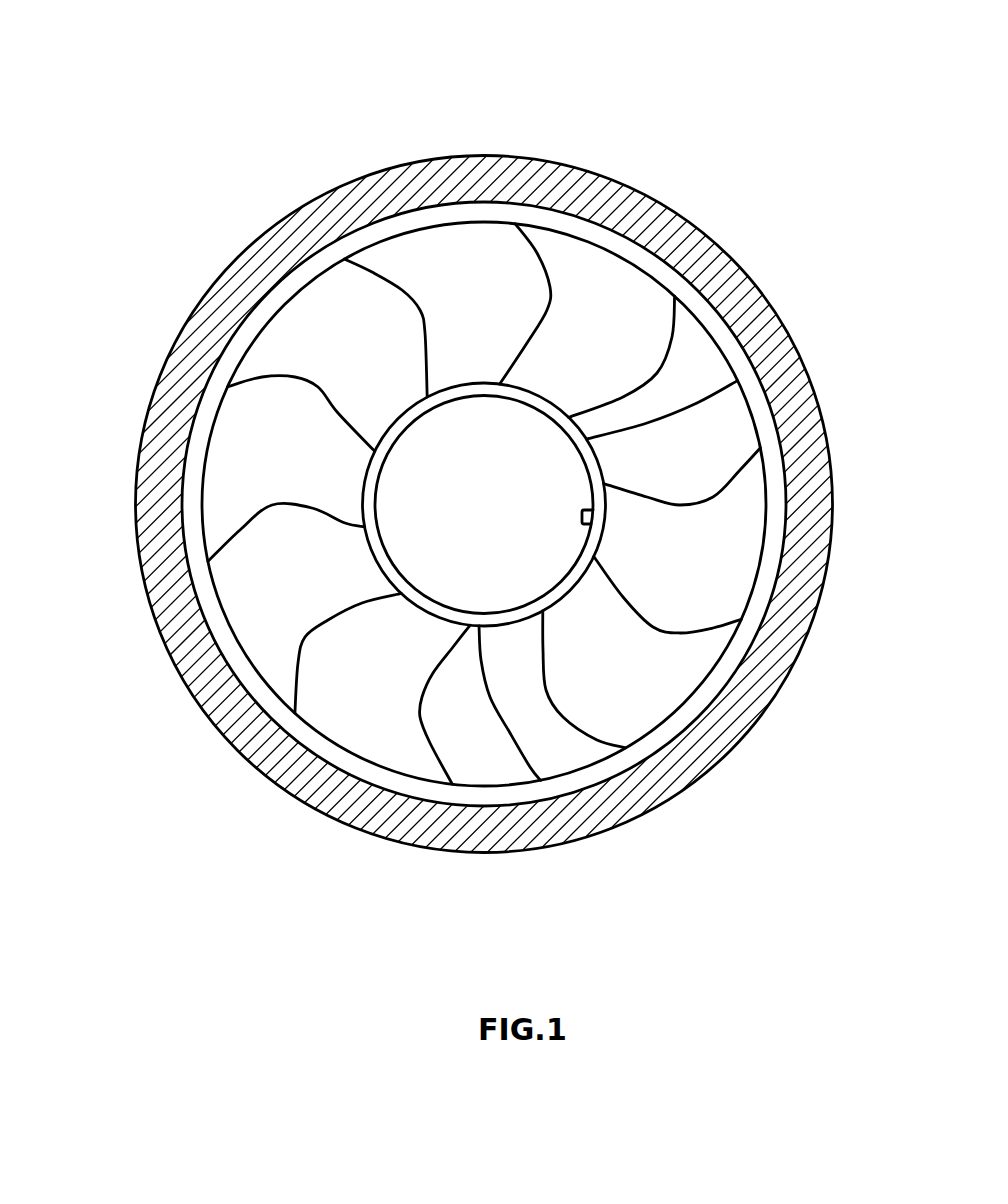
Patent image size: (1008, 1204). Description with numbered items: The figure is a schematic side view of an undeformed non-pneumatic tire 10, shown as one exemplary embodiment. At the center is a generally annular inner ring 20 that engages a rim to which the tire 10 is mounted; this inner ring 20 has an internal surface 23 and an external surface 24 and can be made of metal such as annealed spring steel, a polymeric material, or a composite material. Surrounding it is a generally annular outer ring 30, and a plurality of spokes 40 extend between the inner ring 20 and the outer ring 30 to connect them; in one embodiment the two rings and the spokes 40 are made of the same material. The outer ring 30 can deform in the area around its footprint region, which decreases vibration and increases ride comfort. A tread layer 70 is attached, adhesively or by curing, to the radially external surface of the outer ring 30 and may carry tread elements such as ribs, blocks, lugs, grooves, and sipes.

The non-pneumatic tire 10 is at (650, 68).
The generally annular inner ring 20 is at (464, 580).
The internal surface 23 is at (585, 512).
The external surface 24 is at (541, 780).
The generally annular outer ring 30 is at (237, 358).
The spokes 40 is at (268, 505).
The tread layer 70 is at (238, 258).